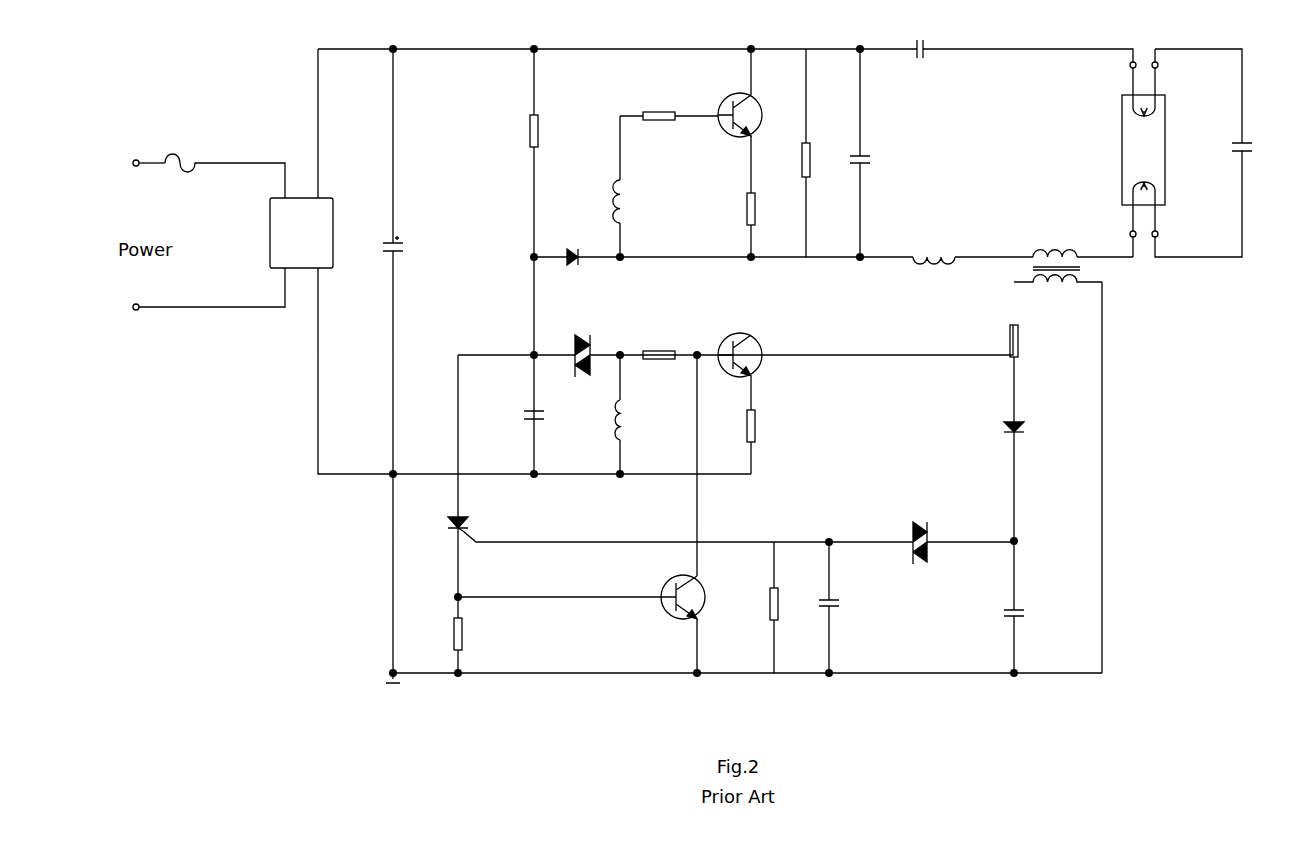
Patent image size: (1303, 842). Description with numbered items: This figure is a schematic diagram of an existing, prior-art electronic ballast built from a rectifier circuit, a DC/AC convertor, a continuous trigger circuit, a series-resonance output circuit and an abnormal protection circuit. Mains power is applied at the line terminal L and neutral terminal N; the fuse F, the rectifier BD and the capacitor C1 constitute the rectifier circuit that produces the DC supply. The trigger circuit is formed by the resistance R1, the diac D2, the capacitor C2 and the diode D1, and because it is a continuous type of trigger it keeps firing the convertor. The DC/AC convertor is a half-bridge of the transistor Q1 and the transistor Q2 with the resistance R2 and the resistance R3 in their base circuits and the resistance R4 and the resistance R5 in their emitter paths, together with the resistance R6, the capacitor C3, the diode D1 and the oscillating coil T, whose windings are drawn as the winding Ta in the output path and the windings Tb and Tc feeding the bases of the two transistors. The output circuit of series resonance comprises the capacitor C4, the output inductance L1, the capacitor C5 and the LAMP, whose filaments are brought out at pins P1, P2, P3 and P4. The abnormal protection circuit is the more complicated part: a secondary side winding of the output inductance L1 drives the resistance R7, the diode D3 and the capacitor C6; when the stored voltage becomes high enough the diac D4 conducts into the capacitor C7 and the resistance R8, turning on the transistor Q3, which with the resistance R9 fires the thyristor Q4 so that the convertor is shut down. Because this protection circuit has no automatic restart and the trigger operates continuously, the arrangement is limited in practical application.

The line terminal L is at (139, 163).
The neutral terminal N is at (199, 293).
The fuse F is at (225, 167).
The rectifier BD is at (313, 236).
The capacitor C1 is at (408, 247).
The resistance R1 is at (516, 131).
The diode D1 is at (568, 246).
The oscillating coil Tb is at (634, 212).
The resistance R2 is at (659, 104).
The transistor Q1 is at (731, 108).
The resistance R4 is at (735, 209).
The diac D2 is at (565, 353).
The capacitor C2 is at (549, 420).
The oscillating coil Tc is at (633, 417).
The resistance R3 is at (659, 343).
The transistor Q2 is at (731, 348).
The resistance R5 is at (735, 426).
The resistance R6 is at (820, 153).
The capacitor C3 is at (872, 153).
The capacitor C4 is at (918, 67).
The oscillating coil Ta is at (937, 246).
The output inductance L1 is at (1058, 256).
The lamp LAMP is at (1105, 150).
The lamp pin P1 is at (1117, 226).
The lamp pin P2 is at (1169, 226).
The lamp pin P3 is at (1167, 74).
The lamp pin P4 is at (1117, 74).
The capacitor C5 is at (1257, 142).
The thyristor Q4 is at (477, 524).
The transistor Q3 is at (668, 590).
The resistance R9 is at (474, 634).
The resistance R8 is at (788, 604).
The capacitor C7 is at (844, 610).
The diac D4 is at (935, 539).
The resistance R7 is at (1030, 341).
The diode D3 is at (1031, 435).
The capacitor C6 is at (1030, 620).